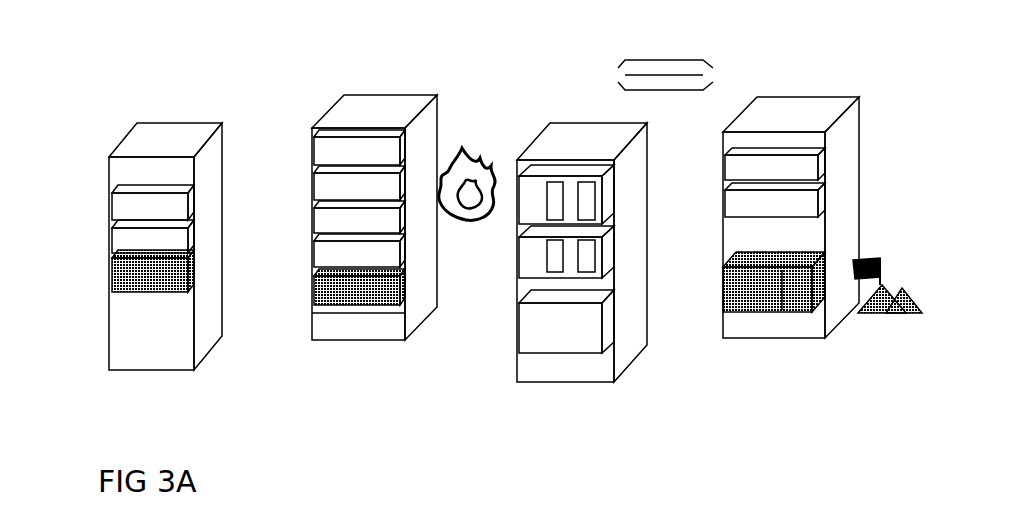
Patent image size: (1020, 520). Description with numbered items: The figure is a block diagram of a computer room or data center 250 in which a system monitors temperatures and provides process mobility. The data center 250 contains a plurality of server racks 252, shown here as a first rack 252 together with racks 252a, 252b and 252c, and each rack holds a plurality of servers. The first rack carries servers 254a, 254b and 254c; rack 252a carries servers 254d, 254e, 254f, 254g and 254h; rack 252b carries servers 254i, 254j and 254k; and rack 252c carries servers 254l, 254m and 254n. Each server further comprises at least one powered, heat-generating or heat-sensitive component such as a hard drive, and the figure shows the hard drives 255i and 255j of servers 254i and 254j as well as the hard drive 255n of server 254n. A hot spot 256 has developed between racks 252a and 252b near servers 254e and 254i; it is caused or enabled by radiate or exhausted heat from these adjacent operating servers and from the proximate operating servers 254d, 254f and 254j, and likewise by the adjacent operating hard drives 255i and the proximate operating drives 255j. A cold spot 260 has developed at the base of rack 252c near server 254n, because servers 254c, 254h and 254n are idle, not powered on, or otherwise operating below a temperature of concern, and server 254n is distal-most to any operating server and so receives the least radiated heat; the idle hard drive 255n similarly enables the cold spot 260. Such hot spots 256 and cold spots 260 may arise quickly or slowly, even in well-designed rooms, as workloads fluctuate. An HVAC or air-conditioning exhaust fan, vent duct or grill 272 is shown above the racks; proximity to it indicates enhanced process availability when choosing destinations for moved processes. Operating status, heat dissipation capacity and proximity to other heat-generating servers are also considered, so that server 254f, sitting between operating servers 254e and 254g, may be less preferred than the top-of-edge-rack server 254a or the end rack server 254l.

The data center 250 is at (294, 410).
The server rack 252 is at (172, 124).
The server rack 252a is at (345, 95).
The server rack 252b is at (612, 122).
The server rack 252c is at (775, 95).
The server 254a is at (125, 208).
The server 254b is at (126, 245).
The server 254c is at (124, 279).
The server 254d is at (330, 152).
The server 254e is at (328, 185).
The server 254f is at (322, 221).
The server 254g is at (328, 255).
The server 254h is at (330, 295).
The server 254i is at (525, 207).
The server 254j is at (525, 263).
The server 254k is at (517, 342).
The server 254l is at (737, 168).
The server 254m is at (737, 205).
The server 254n is at (730, 310).
The server hard drive 255i is at (593, 200).
The server hard drive 255j is at (593, 255).
The server hard drive 255n is at (775, 303).
The hot spot 256 is at (462, 147).
The cold spot 260 is at (877, 317).
The vent duct or grill 272 is at (675, 58).